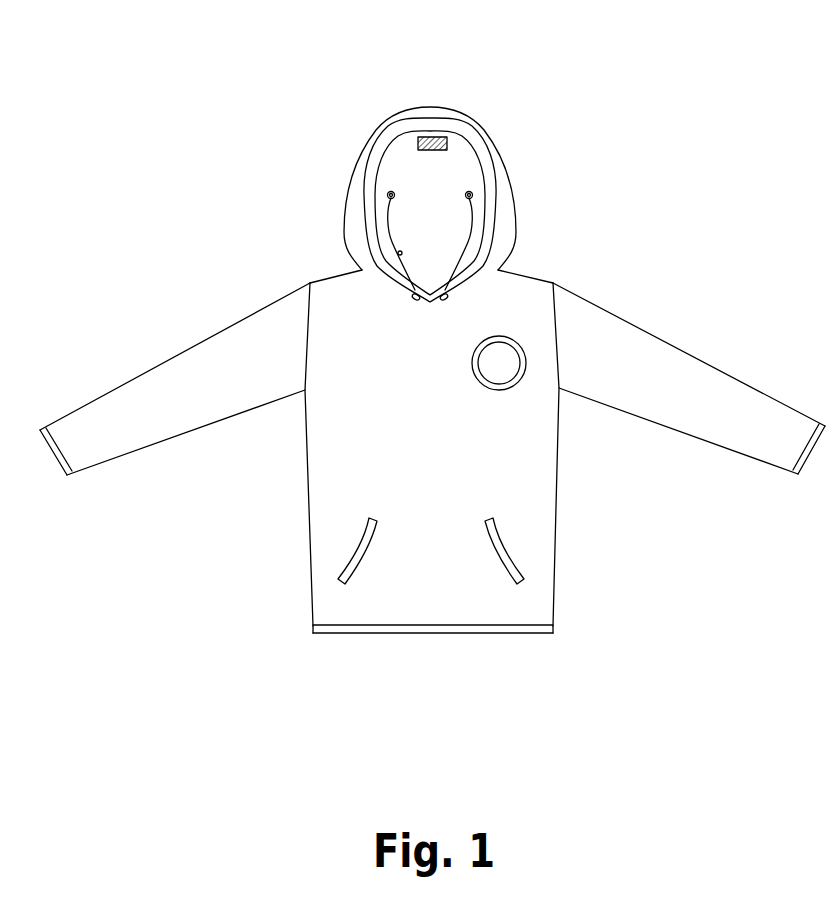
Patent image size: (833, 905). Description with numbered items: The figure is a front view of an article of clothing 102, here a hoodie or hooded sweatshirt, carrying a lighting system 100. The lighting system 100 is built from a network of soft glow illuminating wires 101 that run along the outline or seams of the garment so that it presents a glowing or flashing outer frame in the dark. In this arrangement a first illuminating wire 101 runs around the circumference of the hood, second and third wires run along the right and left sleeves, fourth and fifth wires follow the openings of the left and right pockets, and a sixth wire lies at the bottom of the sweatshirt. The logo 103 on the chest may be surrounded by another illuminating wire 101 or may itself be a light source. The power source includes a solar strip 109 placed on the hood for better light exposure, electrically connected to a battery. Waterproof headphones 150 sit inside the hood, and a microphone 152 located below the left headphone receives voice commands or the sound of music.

The lighting system 100 is at (246, 481).
The illuminating wire 101 is at (58, 476).
The article of clothing 102 is at (545, 264).
The logo 103 is at (509, 412).
The solar strip 109 is at (433, 136).
The waterproof headphones 150 is at (387, 194).
The microphone 152 is at (398, 253).